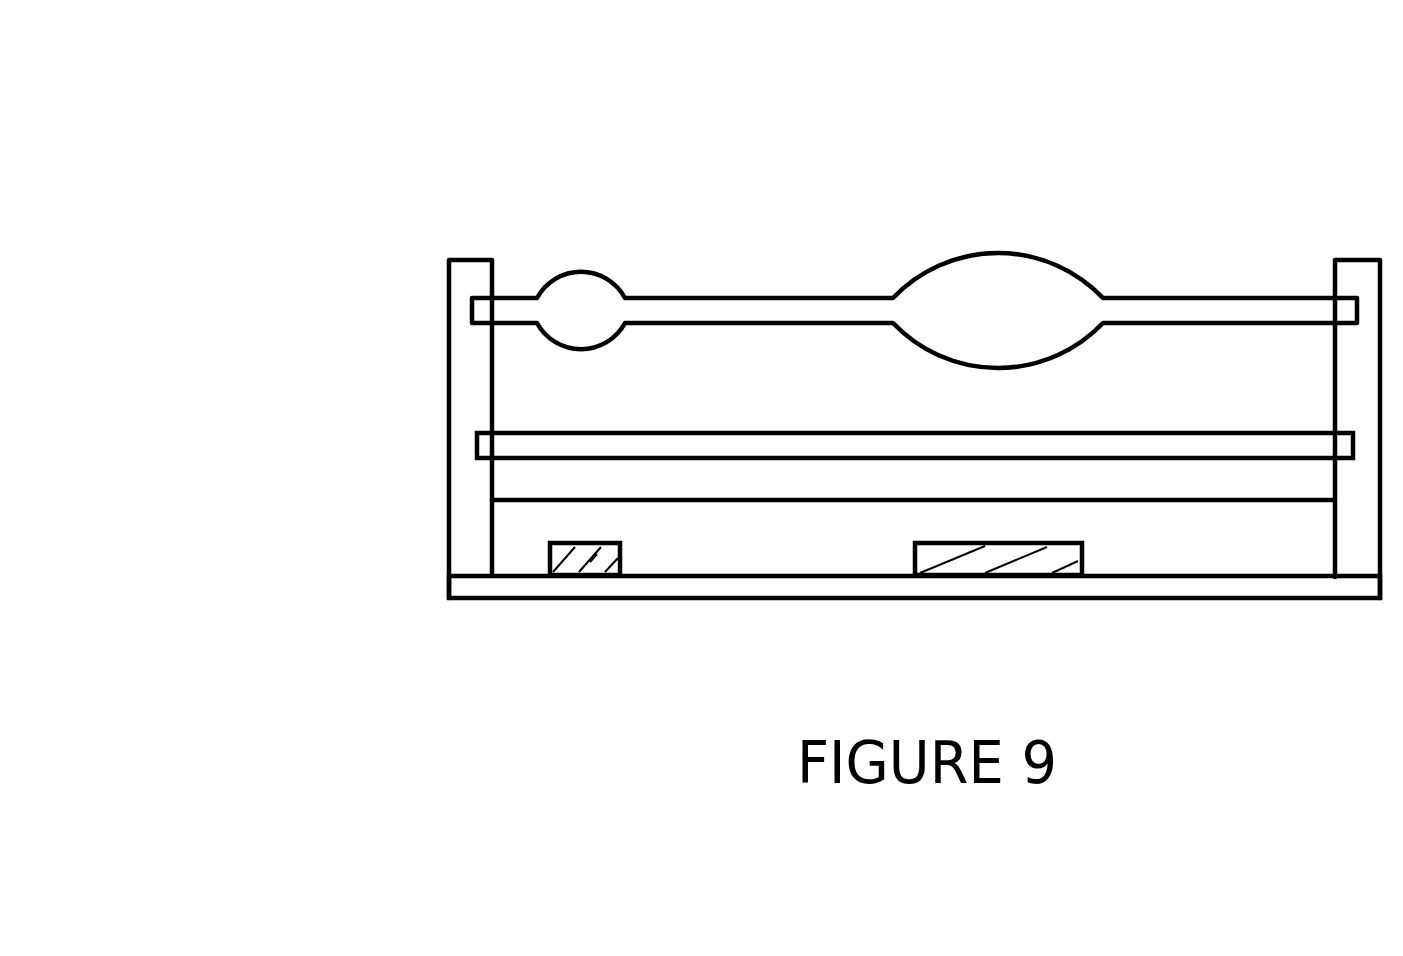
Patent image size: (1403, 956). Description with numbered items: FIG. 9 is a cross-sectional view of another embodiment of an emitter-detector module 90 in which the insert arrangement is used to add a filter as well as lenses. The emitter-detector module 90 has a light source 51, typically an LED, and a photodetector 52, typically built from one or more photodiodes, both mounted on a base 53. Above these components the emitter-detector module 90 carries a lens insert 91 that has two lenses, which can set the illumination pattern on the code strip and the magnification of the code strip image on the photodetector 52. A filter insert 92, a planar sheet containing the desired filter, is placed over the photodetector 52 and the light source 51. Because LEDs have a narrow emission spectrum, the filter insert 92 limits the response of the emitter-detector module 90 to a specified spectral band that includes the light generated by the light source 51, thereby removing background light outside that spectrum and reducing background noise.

The emitter-detector module 90 is at (325, 170).
The lens insert 91 is at (808, 308).
The filter insert 92 is at (750, 447).
The light source 51 is at (587, 562).
The photodetector 52 is at (1040, 560).
The base 53 is at (1300, 585).